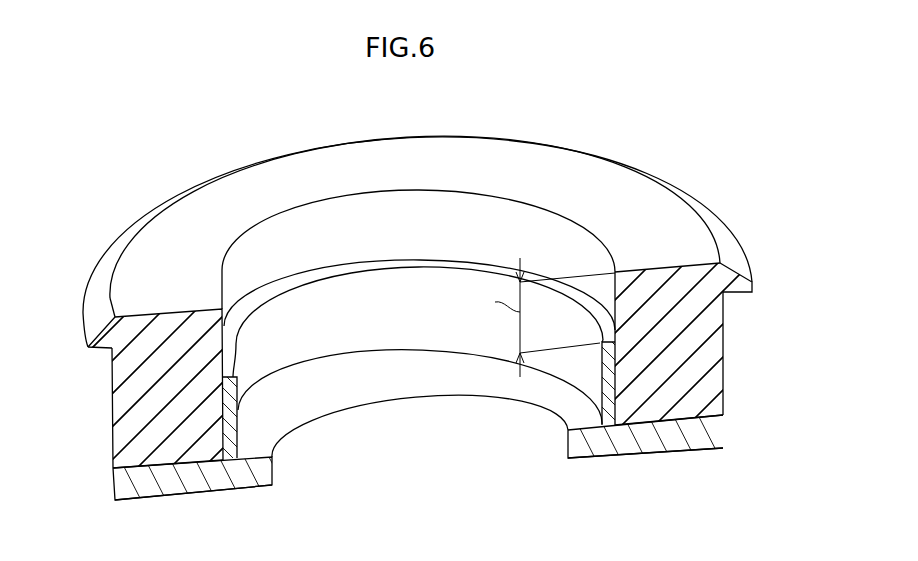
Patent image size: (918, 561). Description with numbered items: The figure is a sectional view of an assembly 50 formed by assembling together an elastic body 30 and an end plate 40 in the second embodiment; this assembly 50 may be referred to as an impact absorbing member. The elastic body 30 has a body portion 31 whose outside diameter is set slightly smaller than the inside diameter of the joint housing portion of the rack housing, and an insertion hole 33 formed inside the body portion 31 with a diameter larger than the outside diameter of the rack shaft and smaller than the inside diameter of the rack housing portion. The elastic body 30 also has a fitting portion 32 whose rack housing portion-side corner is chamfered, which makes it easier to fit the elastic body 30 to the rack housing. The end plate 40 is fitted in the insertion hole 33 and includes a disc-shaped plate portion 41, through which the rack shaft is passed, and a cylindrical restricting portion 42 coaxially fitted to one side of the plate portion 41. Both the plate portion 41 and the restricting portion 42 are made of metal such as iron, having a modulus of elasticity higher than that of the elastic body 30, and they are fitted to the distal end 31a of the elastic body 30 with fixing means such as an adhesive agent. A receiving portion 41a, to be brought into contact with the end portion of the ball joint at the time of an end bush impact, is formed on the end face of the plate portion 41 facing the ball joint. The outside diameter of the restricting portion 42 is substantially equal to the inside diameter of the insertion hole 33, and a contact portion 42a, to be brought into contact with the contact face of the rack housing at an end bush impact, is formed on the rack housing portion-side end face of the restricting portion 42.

The elastic body 30 is at (124, 217).
The body portion 31 is at (118, 413).
The distal end 31a is at (140, 472).
The fitting portion 32 is at (98, 332).
The insertion hole 33 is at (495, 232).
The end plate 40 is at (351, 417).
The plate portion 41 is at (240, 487).
The receiving portion 41a is at (168, 497).
The restricting portion 42 is at (340, 293).
The contact portion 42a is at (234, 347).
The assembly 50 is at (685, 156).